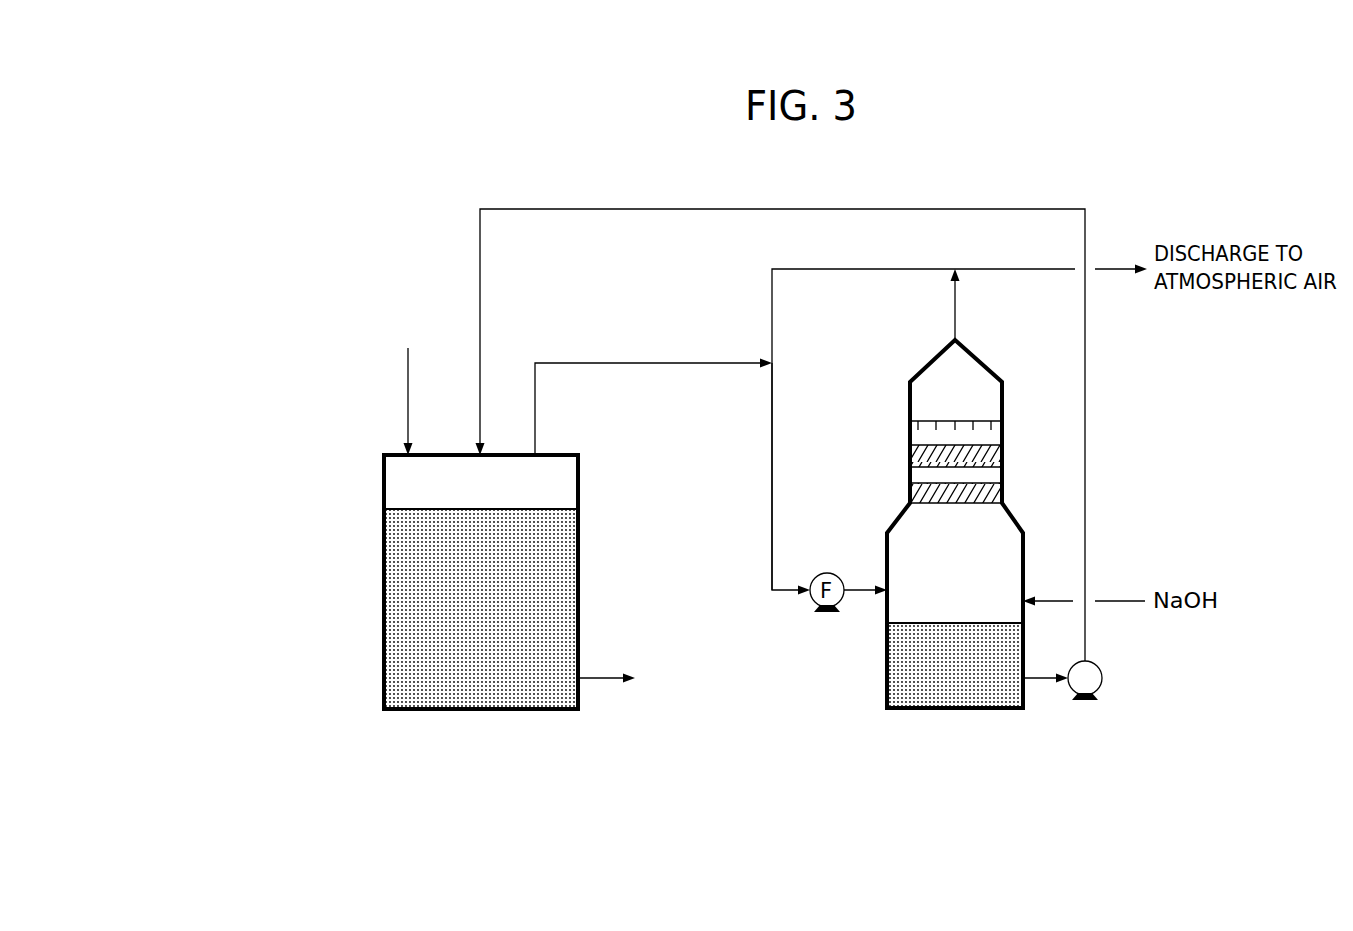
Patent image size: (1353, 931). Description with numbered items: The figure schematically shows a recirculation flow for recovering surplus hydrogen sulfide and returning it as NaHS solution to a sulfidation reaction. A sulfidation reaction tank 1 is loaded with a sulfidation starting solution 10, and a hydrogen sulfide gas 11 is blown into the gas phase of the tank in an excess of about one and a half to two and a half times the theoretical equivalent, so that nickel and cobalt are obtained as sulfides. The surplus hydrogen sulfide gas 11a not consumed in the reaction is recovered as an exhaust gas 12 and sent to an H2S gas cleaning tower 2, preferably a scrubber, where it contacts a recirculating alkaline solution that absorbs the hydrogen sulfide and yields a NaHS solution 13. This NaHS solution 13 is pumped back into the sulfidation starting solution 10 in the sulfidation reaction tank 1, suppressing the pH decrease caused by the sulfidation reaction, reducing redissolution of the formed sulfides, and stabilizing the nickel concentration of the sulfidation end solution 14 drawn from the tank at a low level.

The sulfidation reaction tank 1 is at (578, 487).
The H2S gas cleaning tower 2 is at (1010, 519).
The sulfidation starting solution 10 is at (479, 690).
The hydrogen sulfide gas 11 is at (402, 388).
The surplus hydrogen sulfide gas 11a is at (645, 388).
The exhaust gas 12 is at (682, 479).
The NaHS solution 13 is at (950, 690).
The sulfidation end solution 14 is at (700, 695).